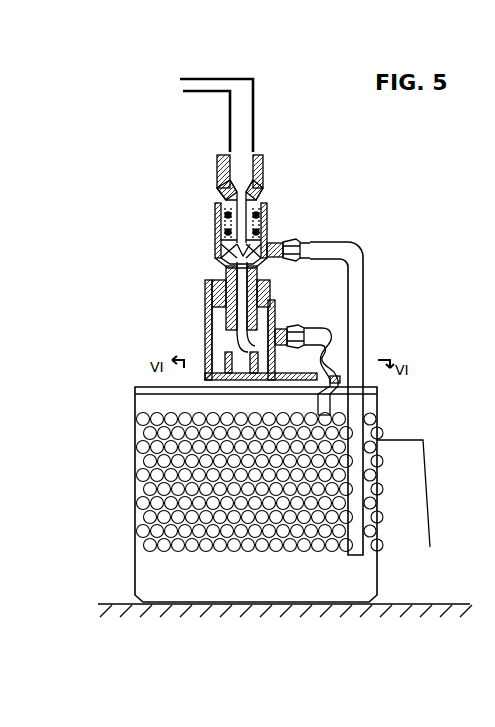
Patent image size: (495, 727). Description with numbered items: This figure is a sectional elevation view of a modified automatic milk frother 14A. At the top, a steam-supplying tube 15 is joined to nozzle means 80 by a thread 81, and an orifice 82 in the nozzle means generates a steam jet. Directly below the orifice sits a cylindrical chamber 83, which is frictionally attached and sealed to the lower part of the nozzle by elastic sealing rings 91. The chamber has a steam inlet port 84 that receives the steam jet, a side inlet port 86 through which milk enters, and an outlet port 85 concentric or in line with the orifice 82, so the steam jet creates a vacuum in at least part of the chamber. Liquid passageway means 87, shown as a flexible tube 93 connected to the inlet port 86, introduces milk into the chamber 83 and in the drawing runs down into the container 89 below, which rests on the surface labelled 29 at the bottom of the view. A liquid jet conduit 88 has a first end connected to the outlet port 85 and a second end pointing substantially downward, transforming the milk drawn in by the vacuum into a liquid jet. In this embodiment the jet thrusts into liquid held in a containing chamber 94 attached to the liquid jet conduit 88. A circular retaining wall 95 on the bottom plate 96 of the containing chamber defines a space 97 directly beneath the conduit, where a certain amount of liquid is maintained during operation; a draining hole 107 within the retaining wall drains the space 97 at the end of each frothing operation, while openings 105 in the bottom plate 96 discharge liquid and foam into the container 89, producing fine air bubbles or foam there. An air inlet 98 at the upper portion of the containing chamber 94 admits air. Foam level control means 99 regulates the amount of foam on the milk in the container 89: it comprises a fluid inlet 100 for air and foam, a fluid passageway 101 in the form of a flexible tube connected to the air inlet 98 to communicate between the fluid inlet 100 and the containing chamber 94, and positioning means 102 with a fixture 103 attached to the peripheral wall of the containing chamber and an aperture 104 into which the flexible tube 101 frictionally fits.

The modified milk frother 14A is at (278, 66).
The steam-supplying tube 15 is at (205, 76).
The container 29 is at (340, 580).
The nozzle means 80 is at (215, 167).
The thread 81 is at (253, 150).
The orifice 82 is at (215, 235).
The cylindrical chamber 83 is at (213, 208).
The steam inlet port 84 is at (217, 258).
The outlet port 85 is at (232, 272).
The inlet port 86 is at (278, 240).
The liquid passageway means 87 is at (367, 242).
The liquid jet conduit 88 is at (208, 292).
The container 89 is at (135, 462).
The elastic sealing rings 91 is at (270, 212).
The flexible tube 93 is at (365, 258).
The containing chamber 94 is at (212, 307).
The circular retaining wall 95 is at (240, 347).
The bottom plate 96 is at (228, 380).
The space 97 is at (205, 325).
The air inlet 98 is at (289, 327).
The foam level control means 99 is at (364, 308).
The fluid inlet 100 is at (326, 410).
The fluid passageway 101 is at (345, 300).
The positioning means 102 is at (348, 352).
The fixture 103 is at (342, 378).
The aperture 104 is at (333, 400).
The openings 105 is at (210, 382).
The draining hole 107 is at (247, 380).